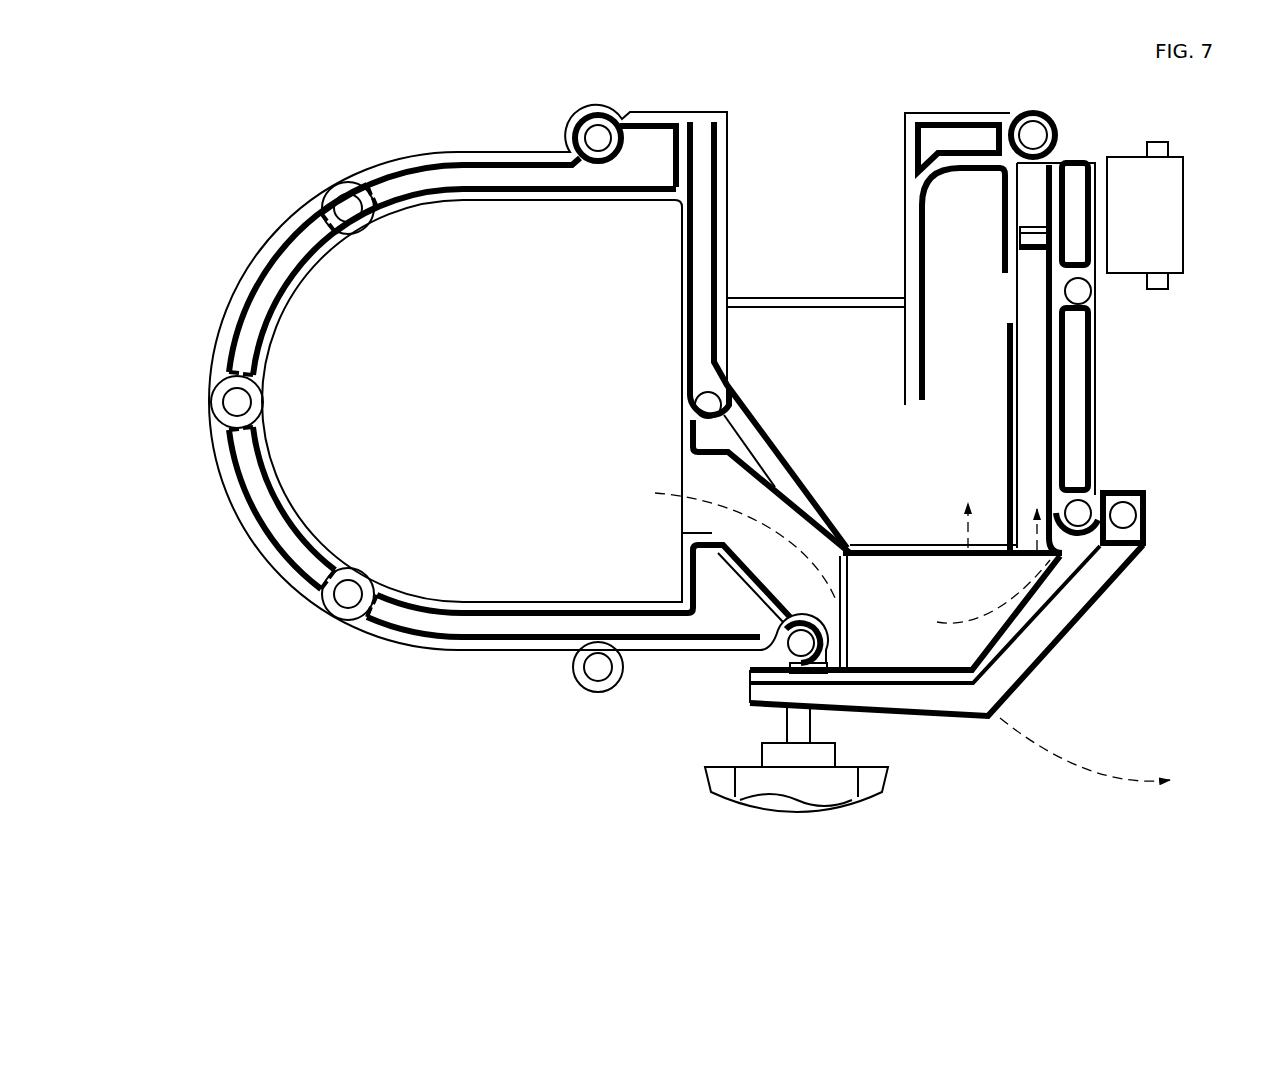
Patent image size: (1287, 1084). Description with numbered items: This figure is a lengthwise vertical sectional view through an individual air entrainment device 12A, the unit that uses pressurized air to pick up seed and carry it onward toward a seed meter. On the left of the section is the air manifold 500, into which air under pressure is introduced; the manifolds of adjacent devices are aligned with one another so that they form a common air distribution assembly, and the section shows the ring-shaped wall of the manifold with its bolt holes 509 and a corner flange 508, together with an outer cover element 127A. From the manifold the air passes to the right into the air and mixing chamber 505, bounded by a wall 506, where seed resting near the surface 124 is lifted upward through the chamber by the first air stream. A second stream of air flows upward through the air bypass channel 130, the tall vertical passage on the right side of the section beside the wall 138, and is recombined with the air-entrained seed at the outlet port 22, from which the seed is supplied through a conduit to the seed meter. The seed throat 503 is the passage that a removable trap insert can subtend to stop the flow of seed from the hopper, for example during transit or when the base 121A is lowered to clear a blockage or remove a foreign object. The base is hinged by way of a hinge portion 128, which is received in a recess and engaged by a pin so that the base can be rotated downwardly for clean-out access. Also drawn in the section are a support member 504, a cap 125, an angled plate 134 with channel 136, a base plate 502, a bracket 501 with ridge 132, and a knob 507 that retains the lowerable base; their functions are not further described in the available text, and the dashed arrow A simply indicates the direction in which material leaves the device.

The air manifold 500 is at (490, 409).
The bolt holes 509 is at (590, 125).
The flange 508 is at (662, 110).
The air entrainment device 12A is at (470, 141).
The cover 127A is at (260, 247).
The air and mixing chamber 505 is at (962, 240).
The wall 506 is at (927, 336).
The seed throat 503 is at (801, 324).
The support member 504 is at (753, 400).
The wall 138 is at (1005, 421).
The air bypass channel 130 is at (1040, 322).
The cap 125 is at (1037, 253).
The outlet port 22 is at (1185, 155).
The surface 124 is at (905, 542).
The hinge portion 128 is at (1145, 547).
The angled plate 134 is at (1042, 537).
The base 121A is at (1060, 640).
The channel 136 is at (991, 624).
The base plate 502 is at (913, 643).
The bracket 501 is at (711, 529).
The ridge 132 is at (810, 581).
The knob 507 is at (820, 722).
The flow direction A is at (1098, 756).